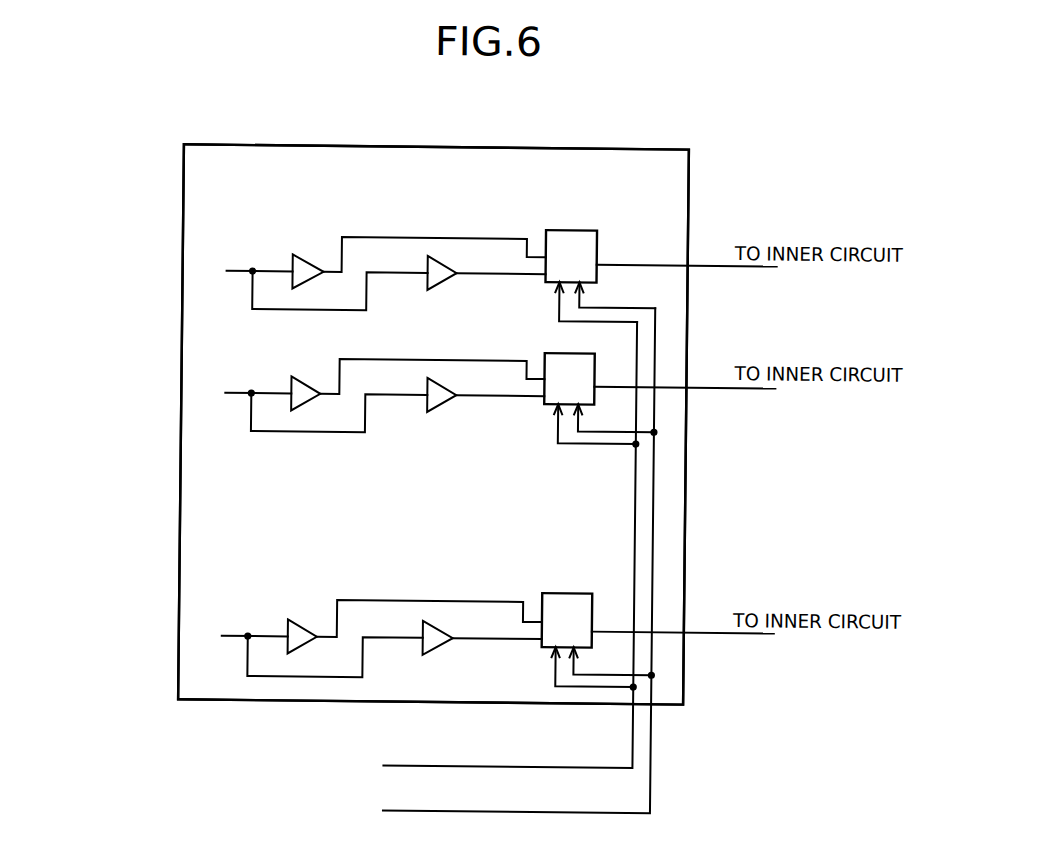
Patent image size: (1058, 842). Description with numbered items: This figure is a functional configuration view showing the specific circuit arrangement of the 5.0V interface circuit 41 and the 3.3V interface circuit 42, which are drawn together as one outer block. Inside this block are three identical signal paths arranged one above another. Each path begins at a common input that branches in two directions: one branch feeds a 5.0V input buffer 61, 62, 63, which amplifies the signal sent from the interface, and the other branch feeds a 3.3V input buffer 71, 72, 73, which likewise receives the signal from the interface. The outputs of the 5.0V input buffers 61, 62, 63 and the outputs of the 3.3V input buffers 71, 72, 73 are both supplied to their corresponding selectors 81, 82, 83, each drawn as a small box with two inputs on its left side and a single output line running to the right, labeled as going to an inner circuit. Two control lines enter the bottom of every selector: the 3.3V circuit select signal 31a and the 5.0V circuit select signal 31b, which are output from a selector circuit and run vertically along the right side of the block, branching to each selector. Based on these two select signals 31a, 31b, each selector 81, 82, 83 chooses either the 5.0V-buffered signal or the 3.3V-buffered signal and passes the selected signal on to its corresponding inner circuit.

The 5.0V interface circuit 41 is at (237, 147).
The 3.3V interface circuit 42 is at (433, 424).
The 5.0V input buffer 61 is at (292, 256).
The 5.0V input buffer 62 is at (292, 378).
The 5.0V input buffer 63 is at (291, 621).
The 3.3V input buffer 71 is at (426, 286).
The 3.3V input buffer 72 is at (427, 408).
The 3.3V input buffer 73 is at (425, 651).
The selector 81 is at (566, 229).
The selector 82 is at (569, 352).
The selector 83 is at (568, 592).
The 3.3V circuit select signal 31a is at (341, 548).
The 5.0V circuit select signal 31b is at (350, 562).